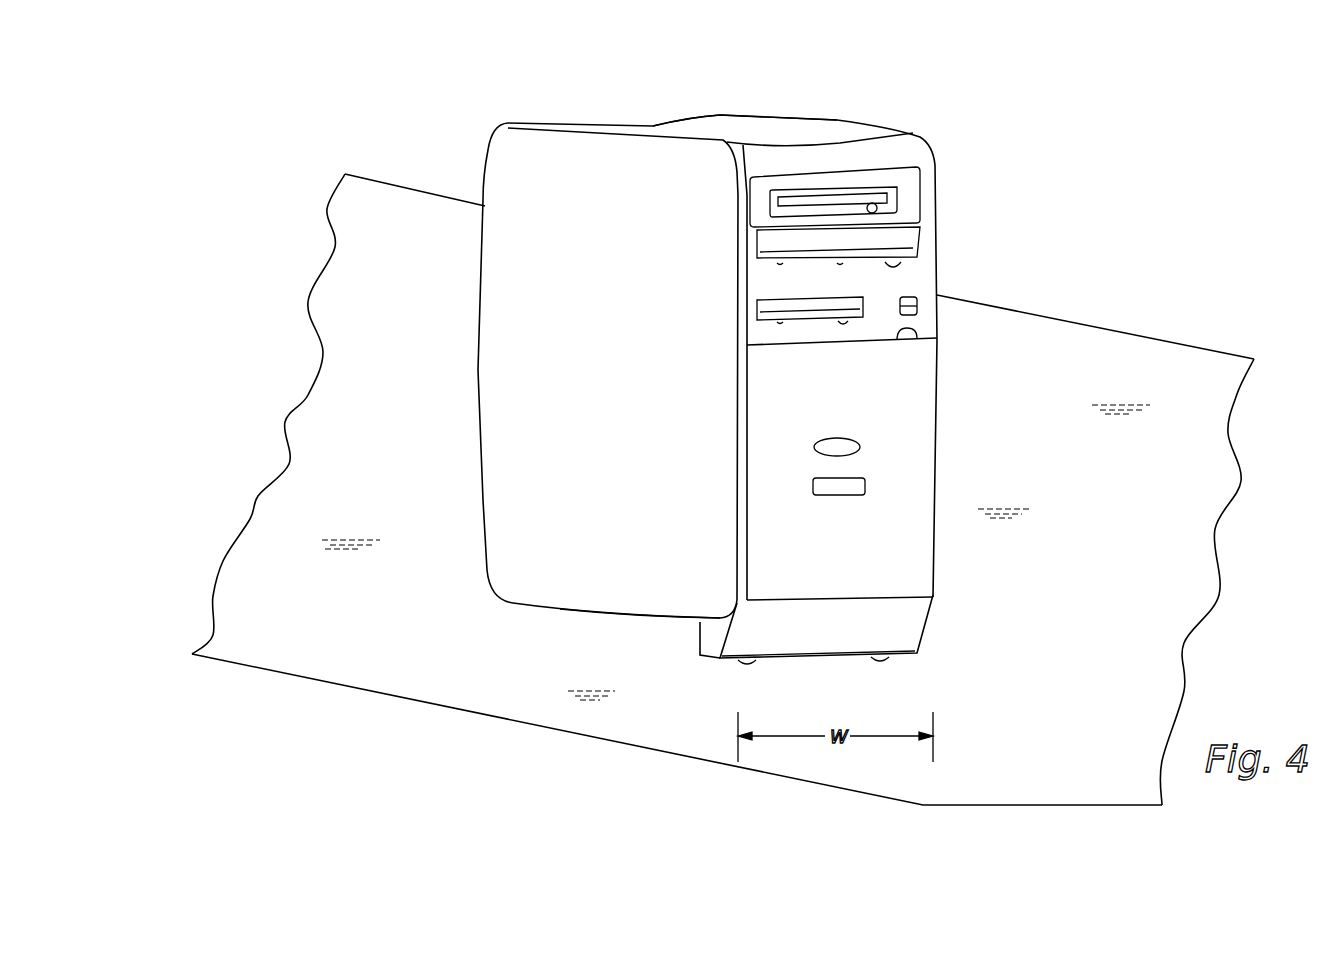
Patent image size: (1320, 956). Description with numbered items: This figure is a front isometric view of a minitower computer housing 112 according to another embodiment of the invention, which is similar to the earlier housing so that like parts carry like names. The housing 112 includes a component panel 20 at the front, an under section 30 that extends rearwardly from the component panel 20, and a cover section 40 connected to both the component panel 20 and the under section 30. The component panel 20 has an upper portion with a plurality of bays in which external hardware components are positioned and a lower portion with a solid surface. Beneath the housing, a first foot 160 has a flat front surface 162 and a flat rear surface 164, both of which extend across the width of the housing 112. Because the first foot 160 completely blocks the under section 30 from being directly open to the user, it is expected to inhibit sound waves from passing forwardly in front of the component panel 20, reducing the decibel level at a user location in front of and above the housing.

The minitower computer housing 112 is at (763, 68).
The component panel 20 is at (910, 368).
The cover section 40 is at (515, 392).
The under section 30 is at (607, 621).
The first foot 160 is at (821, 663).
The flat front surface 162 is at (893, 632).
The flat rear surface 164 is at (698, 640).